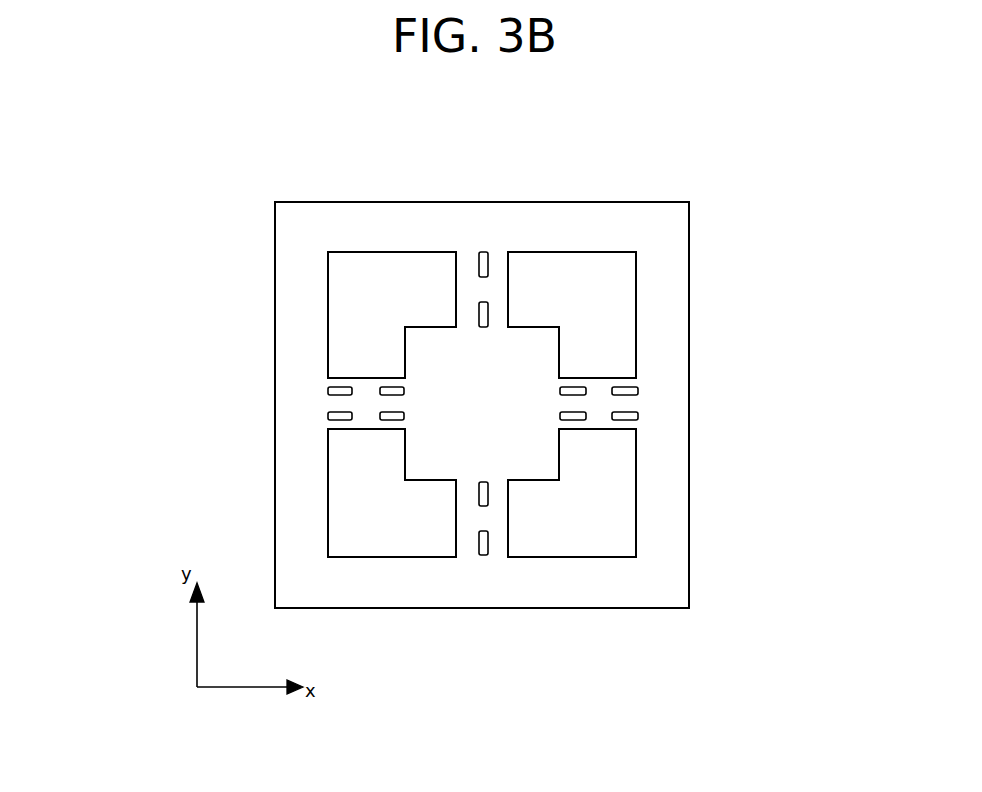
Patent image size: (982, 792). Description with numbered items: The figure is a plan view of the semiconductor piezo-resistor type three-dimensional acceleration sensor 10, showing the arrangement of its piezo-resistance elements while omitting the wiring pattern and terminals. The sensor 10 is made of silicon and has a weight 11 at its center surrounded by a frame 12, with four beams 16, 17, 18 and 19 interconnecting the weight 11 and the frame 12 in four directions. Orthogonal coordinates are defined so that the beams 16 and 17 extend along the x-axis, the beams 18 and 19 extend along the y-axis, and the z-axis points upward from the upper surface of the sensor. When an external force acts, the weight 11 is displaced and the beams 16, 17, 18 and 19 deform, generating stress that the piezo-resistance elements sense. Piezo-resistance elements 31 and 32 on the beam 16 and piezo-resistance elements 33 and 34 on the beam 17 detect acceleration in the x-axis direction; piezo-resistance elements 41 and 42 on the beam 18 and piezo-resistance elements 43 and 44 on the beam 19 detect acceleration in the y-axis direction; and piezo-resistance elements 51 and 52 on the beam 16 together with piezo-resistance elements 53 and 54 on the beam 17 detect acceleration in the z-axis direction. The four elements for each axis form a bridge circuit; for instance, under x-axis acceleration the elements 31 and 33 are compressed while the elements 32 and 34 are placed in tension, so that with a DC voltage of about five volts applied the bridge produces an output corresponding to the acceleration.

The acceleration sensor 10 is at (313, 198).
The weight 11 is at (430, 338).
The frame 12 is at (451, 359).
The beam 16 is at (287, 420).
The beam 17 is at (667, 409).
The beam 18 is at (503, 578).
The beam 19 is at (515, 238).
The piezo-resistance element 31 is at (341, 420).
The piezo-resistance element 32 is at (393, 420).
The piezo-resistance element 33 is at (573, 420).
The piezo-resistance element 34 is at (622, 420).
The piezo-resistance element 41 is at (488, 542).
The piezo-resistance element 42 is at (488, 493).
The piezo-resistance element 43 is at (487, 313).
The piezo-resistance element 44 is at (487, 263).
The piezo-resistance element 51 is at (343, 387).
The piezo-resistance element 52 is at (393, 387).
The piezo-resistance element 53 is at (572, 387).
The piezo-resistance element 54 is at (622, 387).